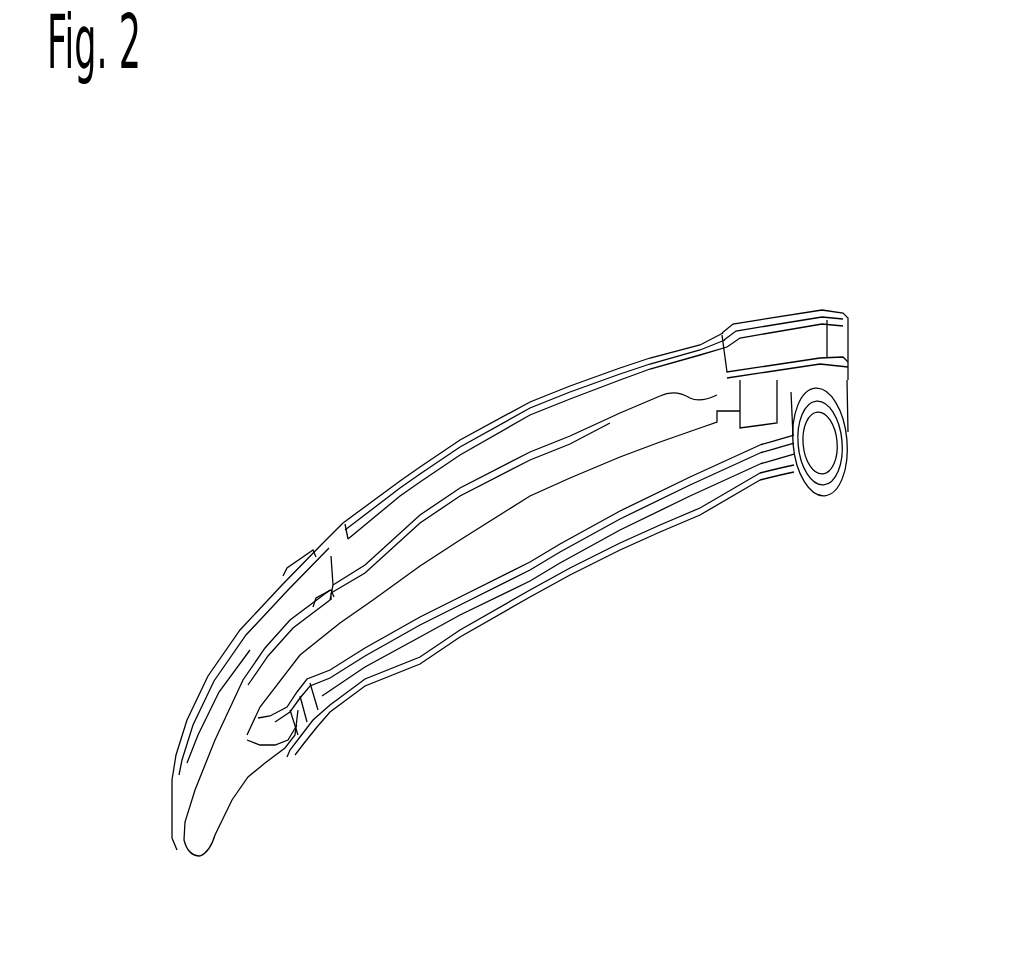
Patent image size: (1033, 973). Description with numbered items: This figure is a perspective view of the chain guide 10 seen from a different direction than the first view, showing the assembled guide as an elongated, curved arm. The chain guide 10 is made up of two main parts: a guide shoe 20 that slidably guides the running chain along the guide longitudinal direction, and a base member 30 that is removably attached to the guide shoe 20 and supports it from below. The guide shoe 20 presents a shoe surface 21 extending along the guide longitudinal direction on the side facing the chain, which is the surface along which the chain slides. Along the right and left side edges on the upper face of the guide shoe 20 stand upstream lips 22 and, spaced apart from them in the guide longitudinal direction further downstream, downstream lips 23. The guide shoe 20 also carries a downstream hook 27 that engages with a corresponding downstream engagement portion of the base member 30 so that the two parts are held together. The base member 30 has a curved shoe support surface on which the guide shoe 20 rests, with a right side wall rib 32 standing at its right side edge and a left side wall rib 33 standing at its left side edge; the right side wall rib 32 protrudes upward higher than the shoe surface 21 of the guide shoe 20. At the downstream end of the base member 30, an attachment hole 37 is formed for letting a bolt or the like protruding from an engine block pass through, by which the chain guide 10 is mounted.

The chain guide 10 is at (183, 213).
The guide shoe 20 is at (504, 407).
The shoe surface 21 is at (582, 400).
The upstream lips 22 is at (233, 643).
The downstream lips 23 is at (770, 320).
The downstream hook 27 is at (752, 413).
The base member 30 is at (548, 555).
The right side wall rib 32 is at (415, 525).
The left side wall rib 33 is at (403, 473).
The attachment hole 37 is at (823, 445).